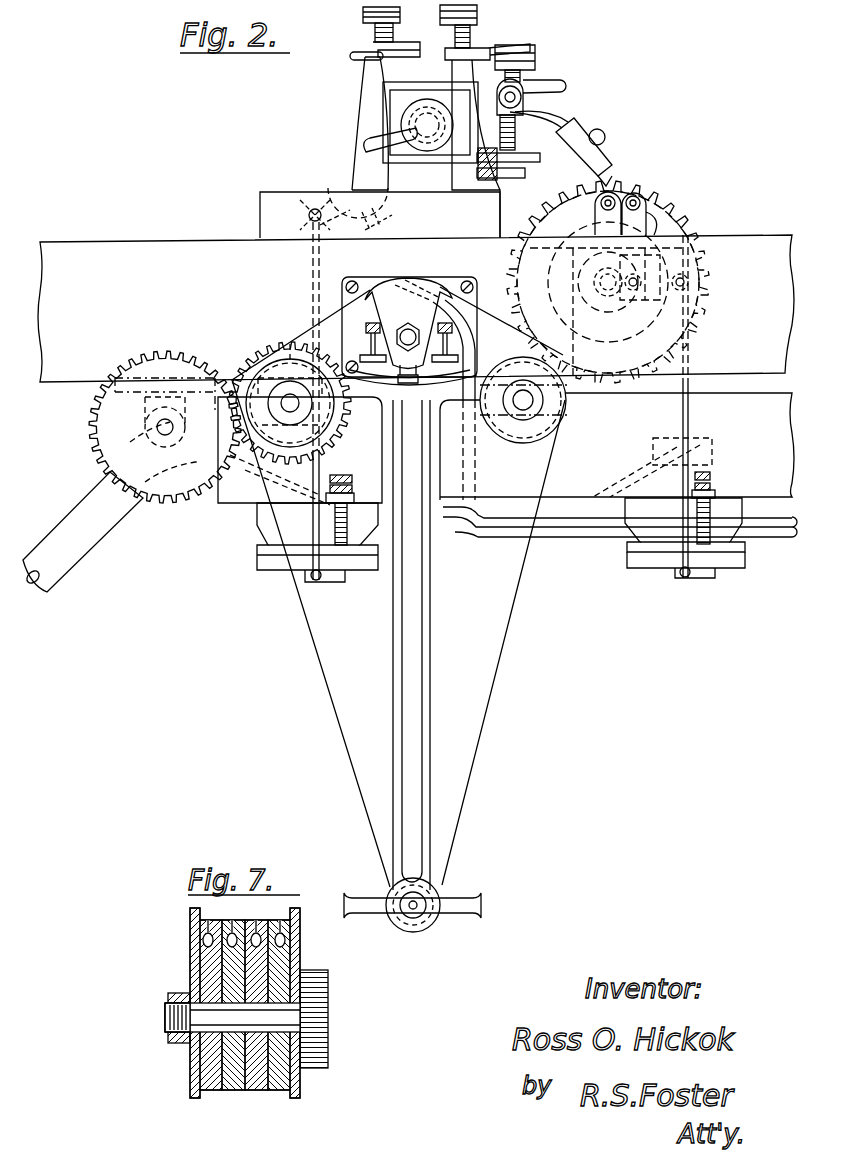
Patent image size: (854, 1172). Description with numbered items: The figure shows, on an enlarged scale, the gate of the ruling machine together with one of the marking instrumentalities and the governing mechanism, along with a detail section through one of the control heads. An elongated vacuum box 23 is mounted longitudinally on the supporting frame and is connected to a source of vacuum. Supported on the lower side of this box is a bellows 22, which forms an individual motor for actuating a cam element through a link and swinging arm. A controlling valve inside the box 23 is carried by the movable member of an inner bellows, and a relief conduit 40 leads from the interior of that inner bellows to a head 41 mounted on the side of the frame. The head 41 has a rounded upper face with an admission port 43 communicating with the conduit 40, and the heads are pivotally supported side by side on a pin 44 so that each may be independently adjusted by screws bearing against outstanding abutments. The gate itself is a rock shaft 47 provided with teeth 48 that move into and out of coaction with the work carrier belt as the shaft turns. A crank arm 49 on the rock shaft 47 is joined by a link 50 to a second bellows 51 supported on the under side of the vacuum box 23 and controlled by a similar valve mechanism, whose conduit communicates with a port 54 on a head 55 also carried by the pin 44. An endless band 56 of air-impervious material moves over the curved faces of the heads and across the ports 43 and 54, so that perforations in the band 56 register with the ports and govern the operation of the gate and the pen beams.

In FIG. 2, the bellows 22 is at (667, 560).
In FIG. 2, the vacuum box 23 is at (507, 465).
In FIG. 2, the relief conduit 40 is at (472, 368).
In FIG. 2, the head 41 is at (392, 290).
In FIG. 7, the head 41 is at (210, 960).
In FIG. 7, the admission port 43 is at (230, 925).
In FIG. 7, the pin 44 is at (165, 1012).
In FIG. 2, the rock shaft 47 is at (350, 185).
In FIG. 2, the teeth 48 is at (382, 221).
In FIG. 2, the crank arm 49 is at (303, 194).
In FIG. 2, the link 50 is at (310, 278).
In FIG. 2, the bellows 51 is at (280, 570).
In FIG. 7, the port 54 is at (284, 920).
In FIG. 7, the head 55 is at (285, 960).
In FIG. 7, the endless band 56 is at (296, 910).